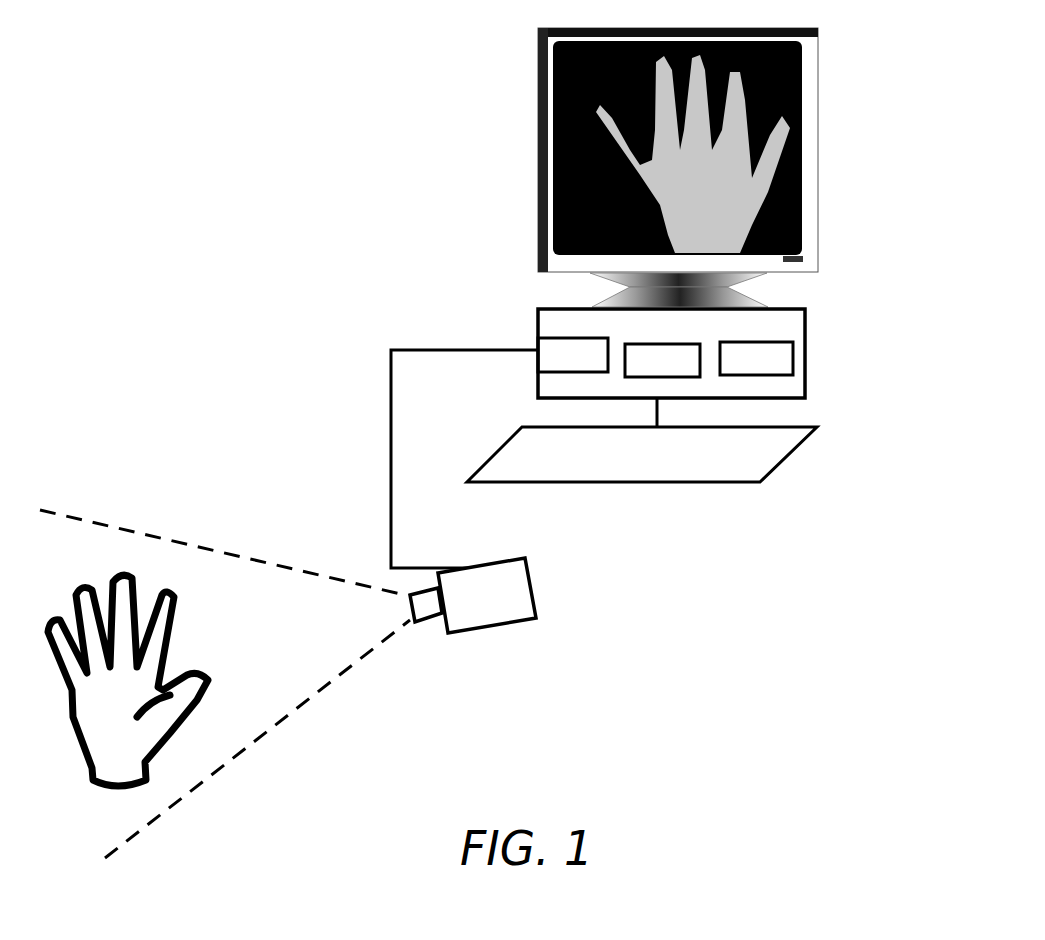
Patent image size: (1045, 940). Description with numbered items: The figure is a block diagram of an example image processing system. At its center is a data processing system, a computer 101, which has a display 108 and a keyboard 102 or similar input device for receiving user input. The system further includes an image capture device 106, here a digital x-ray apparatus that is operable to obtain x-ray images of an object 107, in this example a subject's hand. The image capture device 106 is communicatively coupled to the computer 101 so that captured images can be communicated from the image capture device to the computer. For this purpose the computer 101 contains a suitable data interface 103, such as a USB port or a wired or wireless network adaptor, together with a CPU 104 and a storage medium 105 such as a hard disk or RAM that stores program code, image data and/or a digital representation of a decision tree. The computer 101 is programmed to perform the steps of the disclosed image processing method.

The computer 101 is at (807, 357).
The keyboard 102 is at (783, 463).
The data interface 103 is at (573, 338).
The CPU 104 is at (670, 377).
The storage medium 105 is at (762, 341).
The image capture device 106 is at (538, 592).
The object 107 is at (167, 647).
The display 108 is at (573, 28).